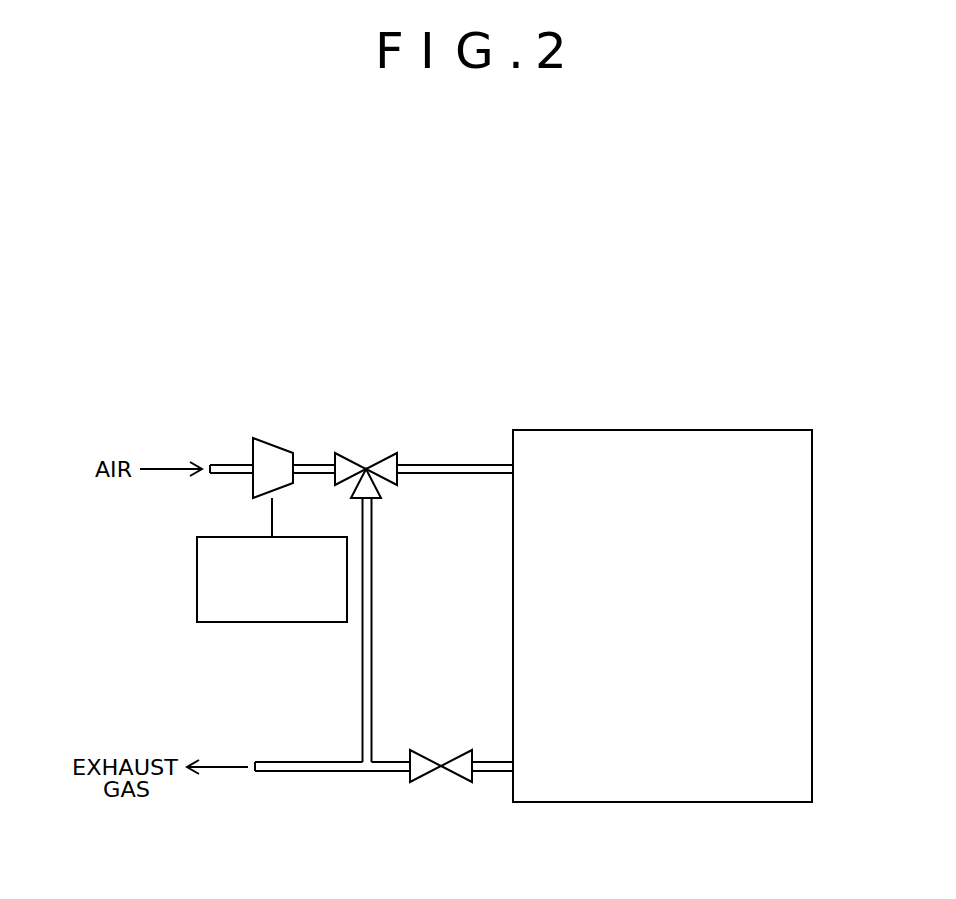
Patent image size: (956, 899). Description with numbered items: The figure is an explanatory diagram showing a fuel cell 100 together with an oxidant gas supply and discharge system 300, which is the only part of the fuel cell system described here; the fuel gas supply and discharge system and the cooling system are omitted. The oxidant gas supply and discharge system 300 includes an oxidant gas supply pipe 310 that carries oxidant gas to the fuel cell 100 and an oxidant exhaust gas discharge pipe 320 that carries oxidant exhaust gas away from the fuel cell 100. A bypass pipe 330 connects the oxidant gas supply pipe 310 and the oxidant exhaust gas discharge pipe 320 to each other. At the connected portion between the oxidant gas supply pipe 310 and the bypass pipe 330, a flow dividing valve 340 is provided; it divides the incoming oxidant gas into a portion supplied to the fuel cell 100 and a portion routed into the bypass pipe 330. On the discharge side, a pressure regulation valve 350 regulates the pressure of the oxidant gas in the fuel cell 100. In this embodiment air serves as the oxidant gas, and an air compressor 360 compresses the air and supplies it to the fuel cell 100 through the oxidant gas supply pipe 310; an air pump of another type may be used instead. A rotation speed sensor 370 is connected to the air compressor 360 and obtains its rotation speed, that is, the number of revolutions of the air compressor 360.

The fuel cell 100 is at (773, 430).
The oxidant gas supply and discharge system 300 is at (515, 318).
The oxidant gas supply pipe 310 is at (428, 462).
The oxidant exhaust gas discharge pipe 320 is at (483, 773).
The bypass pipe 330 is at (372, 597).
The flow dividing valve 340 is at (349, 452).
The pressure regulation valve 350 is at (425, 752).
The air compressor 360 is at (268, 438).
The rotation speed sensor 370 is at (197, 557).